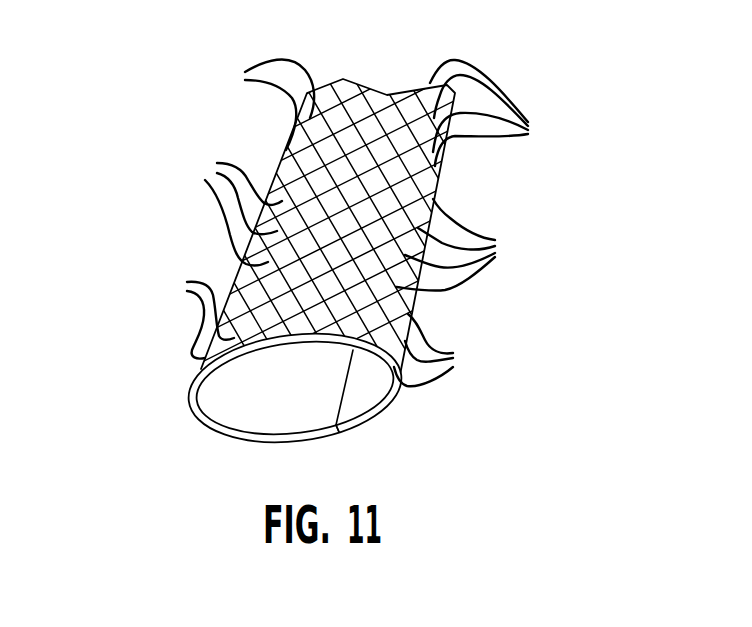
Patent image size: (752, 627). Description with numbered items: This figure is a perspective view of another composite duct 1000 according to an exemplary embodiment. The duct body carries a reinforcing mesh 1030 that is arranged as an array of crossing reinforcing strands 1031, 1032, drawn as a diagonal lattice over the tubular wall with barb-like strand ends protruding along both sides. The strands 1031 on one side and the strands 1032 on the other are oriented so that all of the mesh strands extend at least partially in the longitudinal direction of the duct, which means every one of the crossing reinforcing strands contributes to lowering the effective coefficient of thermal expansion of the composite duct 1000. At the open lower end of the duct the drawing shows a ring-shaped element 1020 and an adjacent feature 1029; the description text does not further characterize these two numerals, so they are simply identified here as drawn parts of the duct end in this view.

The composite duct 1000 is at (148, 197).
The ring 1020 is at (388, 402).
The edge of ring 1029 is at (369, 441).
The reinforcing mesh 1030 is at (524, 201).
The reinforcing strands 1031 is at (229, 207).
The reinforcing strands 1032 is at (483, 223).